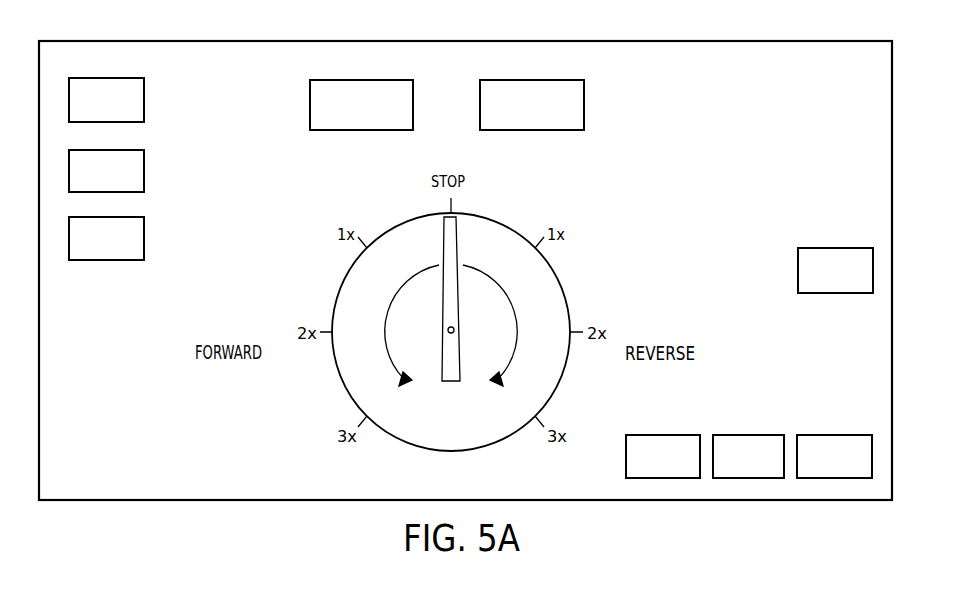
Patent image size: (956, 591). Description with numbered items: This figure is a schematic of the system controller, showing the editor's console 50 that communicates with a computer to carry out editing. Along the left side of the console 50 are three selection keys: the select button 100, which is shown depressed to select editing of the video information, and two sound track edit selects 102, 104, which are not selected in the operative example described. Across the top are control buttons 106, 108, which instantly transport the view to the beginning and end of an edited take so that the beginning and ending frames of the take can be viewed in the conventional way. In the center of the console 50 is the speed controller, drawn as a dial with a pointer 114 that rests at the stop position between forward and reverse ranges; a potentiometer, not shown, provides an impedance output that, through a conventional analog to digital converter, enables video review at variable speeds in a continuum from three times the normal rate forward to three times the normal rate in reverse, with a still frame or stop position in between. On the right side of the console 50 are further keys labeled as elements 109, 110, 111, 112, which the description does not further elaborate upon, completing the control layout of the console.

The editor's console 50 is at (767, 37).
The select button 100 is at (146, 101).
The sound track edit select 102 is at (146, 171).
The sound track edit select 104 is at (146, 238).
The control button 106 is at (386, 80).
The control button 108 is at (558, 80).
The LIST key 109 is at (813, 248).
The VAR key 110 is at (643, 435).
The STP key 111 is at (725, 435).
The PLAY key 112 is at (809, 435).
The speed control knob pointer 114 is at (456, 248).